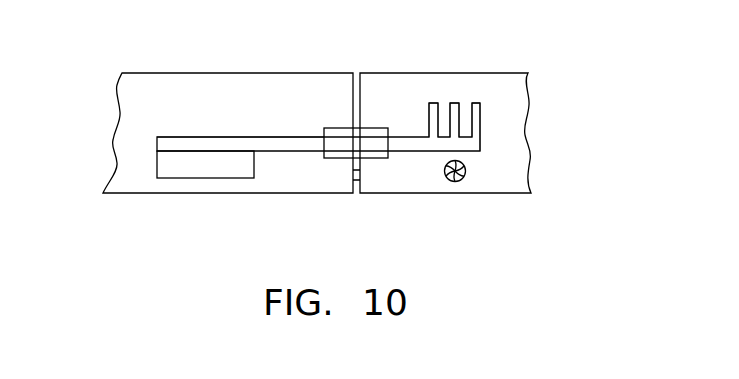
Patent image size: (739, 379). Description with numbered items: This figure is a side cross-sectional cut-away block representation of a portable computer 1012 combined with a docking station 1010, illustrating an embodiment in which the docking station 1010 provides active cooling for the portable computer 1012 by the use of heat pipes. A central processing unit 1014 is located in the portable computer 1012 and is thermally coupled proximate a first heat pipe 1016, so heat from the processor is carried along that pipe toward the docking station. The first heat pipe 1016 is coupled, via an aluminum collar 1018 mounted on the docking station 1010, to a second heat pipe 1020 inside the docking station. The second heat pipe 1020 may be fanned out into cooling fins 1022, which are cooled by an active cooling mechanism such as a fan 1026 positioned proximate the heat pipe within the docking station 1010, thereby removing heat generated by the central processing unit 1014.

The docking station 1010 is at (402, 73).
The portable computer 1012 is at (283, 73).
The central processing unit 1014 is at (208, 178).
The first heat pipe 1016 is at (193, 137).
The aluminum collar 1018 is at (338, 158).
The second heat pipe 1020 is at (470, 155).
The cooling fins 1022 is at (480, 118).
The fan 1026 is at (455, 182).